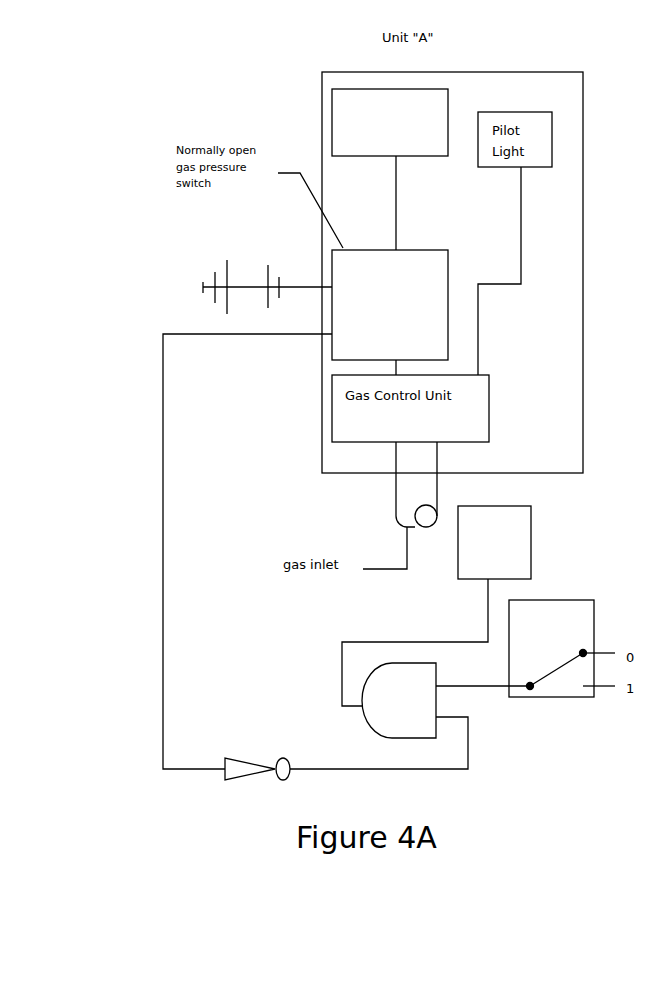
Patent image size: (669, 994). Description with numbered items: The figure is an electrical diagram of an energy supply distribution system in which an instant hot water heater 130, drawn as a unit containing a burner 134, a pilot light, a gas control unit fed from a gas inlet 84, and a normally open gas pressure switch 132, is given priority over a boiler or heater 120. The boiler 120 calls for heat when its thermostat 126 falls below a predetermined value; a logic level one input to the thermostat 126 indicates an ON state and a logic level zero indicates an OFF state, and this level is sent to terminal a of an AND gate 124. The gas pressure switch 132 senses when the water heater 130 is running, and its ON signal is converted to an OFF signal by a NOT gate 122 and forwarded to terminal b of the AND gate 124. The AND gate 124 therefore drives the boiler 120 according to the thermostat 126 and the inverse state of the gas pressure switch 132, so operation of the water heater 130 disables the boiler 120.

The instant hot water heater 130 is at (452, 244).
The burner 134 is at (390, 122).
The normally open gas pressure switch 132 is at (390, 305).
The gas inlet 84 is at (400, 505).
The boiler or heater 120 is at (494, 542).
The thermostat 126 is at (562, 648).
The AND gate 124 is at (399, 700).
The NOT gate 122 is at (247, 757).